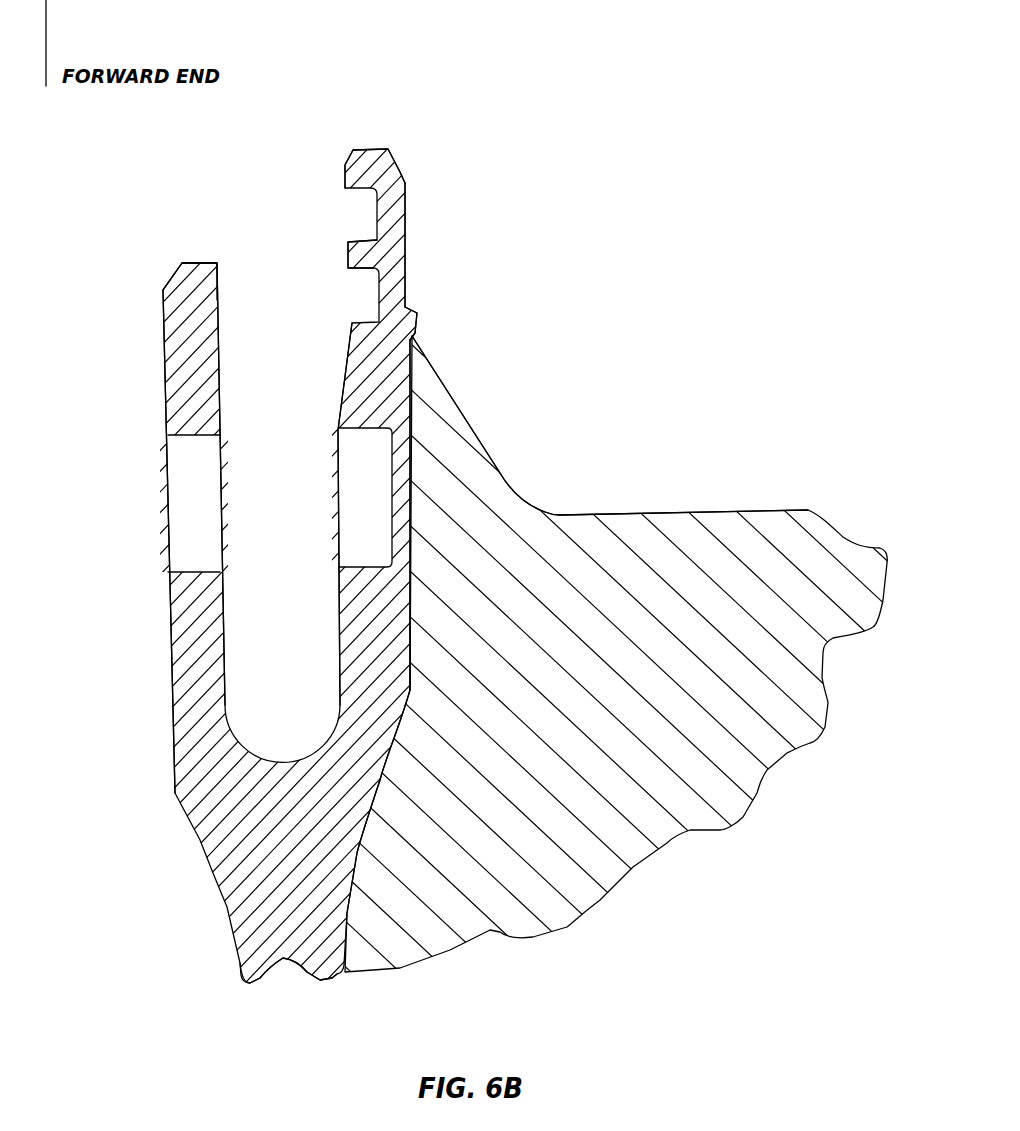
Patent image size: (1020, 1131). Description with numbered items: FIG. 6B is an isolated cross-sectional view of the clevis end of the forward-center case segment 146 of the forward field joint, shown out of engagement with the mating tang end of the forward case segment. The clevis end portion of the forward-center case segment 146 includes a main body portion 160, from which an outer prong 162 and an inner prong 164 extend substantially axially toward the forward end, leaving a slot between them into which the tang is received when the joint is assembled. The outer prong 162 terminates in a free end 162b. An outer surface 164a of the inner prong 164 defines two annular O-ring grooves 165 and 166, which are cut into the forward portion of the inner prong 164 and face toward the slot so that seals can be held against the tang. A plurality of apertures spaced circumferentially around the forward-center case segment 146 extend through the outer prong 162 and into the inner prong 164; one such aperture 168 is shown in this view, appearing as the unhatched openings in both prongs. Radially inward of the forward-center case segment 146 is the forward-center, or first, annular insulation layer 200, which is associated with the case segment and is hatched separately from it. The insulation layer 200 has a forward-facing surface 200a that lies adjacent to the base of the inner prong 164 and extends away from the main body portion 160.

The forward-center case segment 146 is at (252, 960).
The main body portion 160 is at (270, 850).
The outer prong 162 is at (197, 617).
The top end of outer post 162b is at (220, 360).
The inner prong 164 is at (363, 665).
The outer surface of the inner prong 164a is at (352, 353).
The annular O-ring groove 165 is at (362, 213).
The annular O-ring groove 166 is at (367, 302).
The aperture 168 is at (357, 488).
The forward-center annular insulation layer 200 is at (640, 753).
The forward-facing surface 200a is at (747, 510).